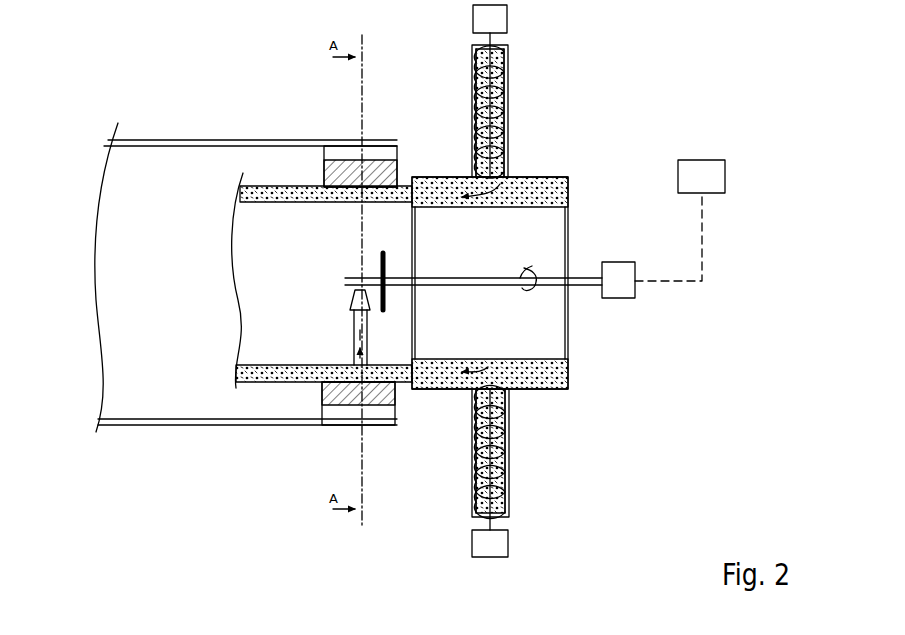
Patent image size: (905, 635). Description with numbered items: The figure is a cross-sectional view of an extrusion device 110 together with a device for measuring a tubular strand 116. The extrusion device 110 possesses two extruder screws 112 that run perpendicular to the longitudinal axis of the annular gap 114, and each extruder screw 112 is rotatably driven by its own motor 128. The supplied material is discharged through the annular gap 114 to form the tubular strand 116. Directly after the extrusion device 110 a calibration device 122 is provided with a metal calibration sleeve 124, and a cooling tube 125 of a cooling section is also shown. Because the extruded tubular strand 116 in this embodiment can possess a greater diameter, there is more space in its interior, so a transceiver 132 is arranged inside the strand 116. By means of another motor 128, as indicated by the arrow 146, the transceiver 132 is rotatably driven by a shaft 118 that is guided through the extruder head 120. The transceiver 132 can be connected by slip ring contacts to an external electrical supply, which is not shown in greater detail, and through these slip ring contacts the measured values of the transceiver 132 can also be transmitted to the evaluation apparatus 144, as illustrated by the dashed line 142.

The extrusion device 110 is at (556, 160).
The extruder screw 112 is at (500, 80).
The annular gap 114 is at (418, 378).
The tubular strand 116 is at (290, 196).
The shaft 118 is at (468, 288).
The extruder head 120 is at (423, 192).
The calibration device 122 is at (375, 152).
The metal calibration sleeve 124 is at (397, 395).
The cooling tube 125 is at (148, 422).
The motor 128 is at (510, 22).
The transceiver 132 is at (350, 293).
The dashed line 142 is at (690, 285).
The evaluation apparatus 144 is at (701, 176).
The arrow 146 is at (528, 290).